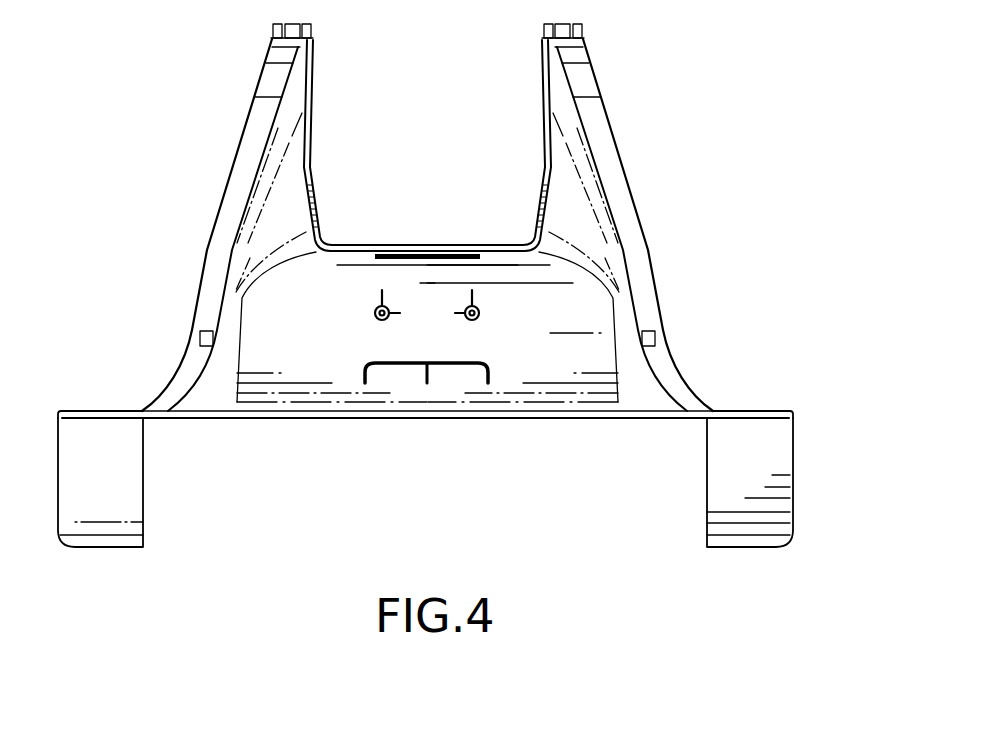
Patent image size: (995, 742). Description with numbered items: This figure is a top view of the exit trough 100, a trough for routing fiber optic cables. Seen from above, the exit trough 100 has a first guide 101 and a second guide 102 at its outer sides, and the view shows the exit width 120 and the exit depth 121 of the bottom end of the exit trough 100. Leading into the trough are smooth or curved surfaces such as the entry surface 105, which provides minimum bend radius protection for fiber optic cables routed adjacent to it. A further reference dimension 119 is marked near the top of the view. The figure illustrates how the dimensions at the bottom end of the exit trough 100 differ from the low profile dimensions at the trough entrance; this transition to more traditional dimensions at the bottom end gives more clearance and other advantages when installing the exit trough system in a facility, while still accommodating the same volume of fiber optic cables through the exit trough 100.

The exit trough 100 is at (700, 131).
The first guide 101 is at (105, 503).
The second guide 102 is at (748, 518).
The entry surface 105 is at (197, 388).
The top reference line 119 is at (542, 53).
The exit width 120 is at (540, 148).
The exit depth 121 is at (320, 37).